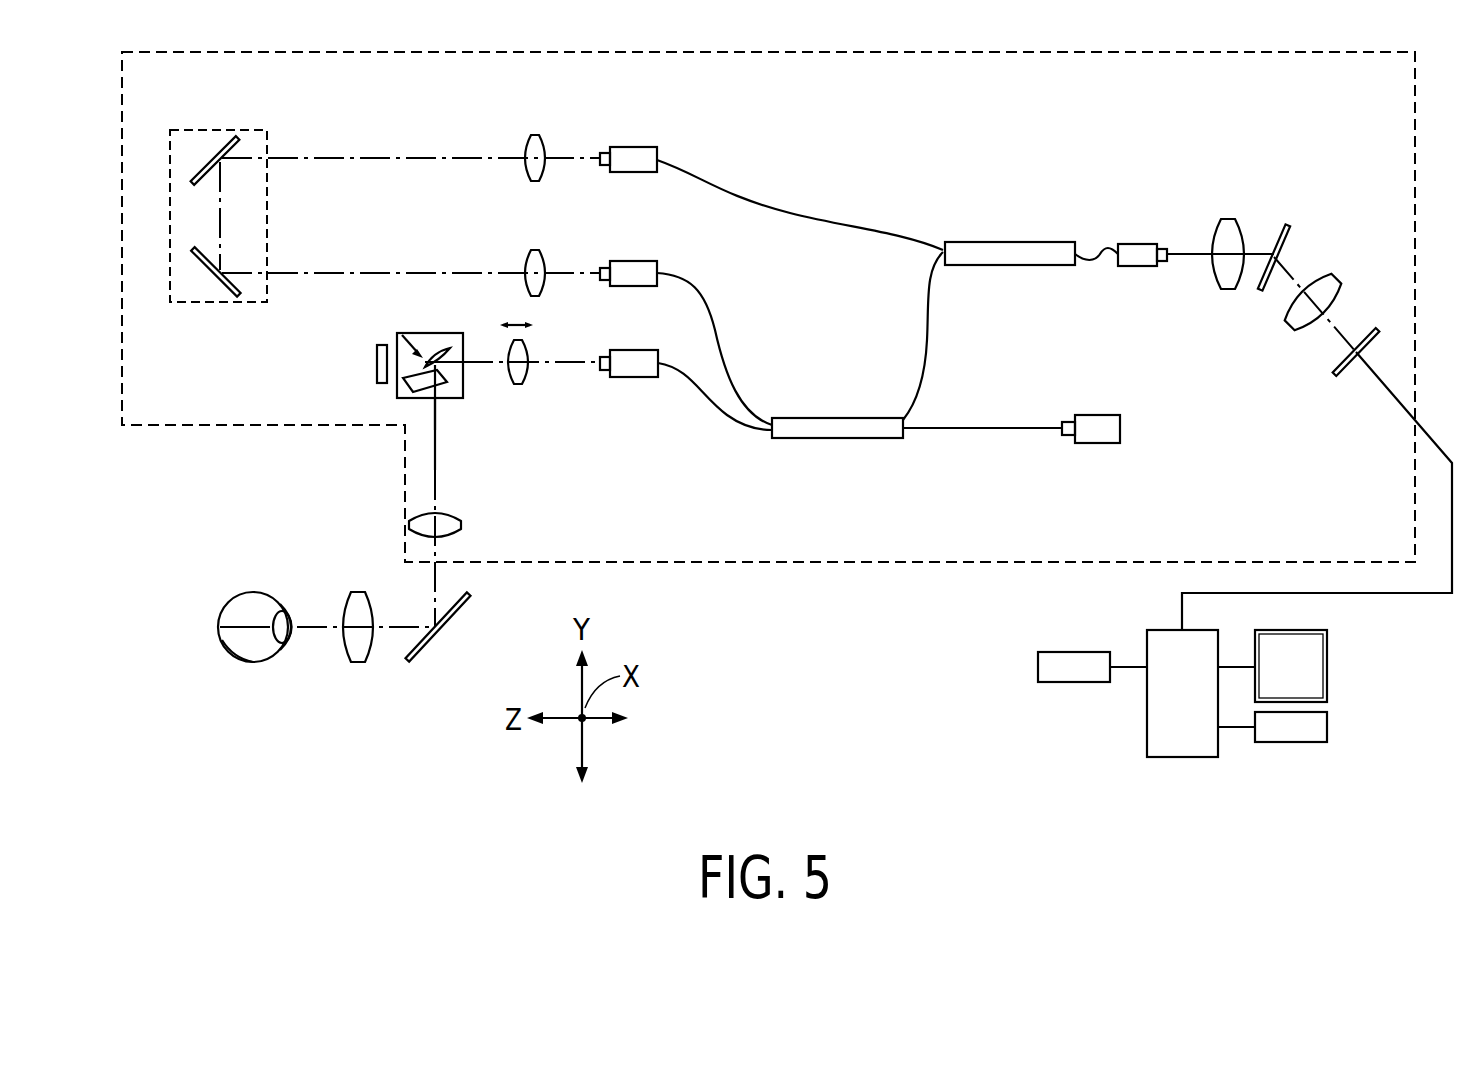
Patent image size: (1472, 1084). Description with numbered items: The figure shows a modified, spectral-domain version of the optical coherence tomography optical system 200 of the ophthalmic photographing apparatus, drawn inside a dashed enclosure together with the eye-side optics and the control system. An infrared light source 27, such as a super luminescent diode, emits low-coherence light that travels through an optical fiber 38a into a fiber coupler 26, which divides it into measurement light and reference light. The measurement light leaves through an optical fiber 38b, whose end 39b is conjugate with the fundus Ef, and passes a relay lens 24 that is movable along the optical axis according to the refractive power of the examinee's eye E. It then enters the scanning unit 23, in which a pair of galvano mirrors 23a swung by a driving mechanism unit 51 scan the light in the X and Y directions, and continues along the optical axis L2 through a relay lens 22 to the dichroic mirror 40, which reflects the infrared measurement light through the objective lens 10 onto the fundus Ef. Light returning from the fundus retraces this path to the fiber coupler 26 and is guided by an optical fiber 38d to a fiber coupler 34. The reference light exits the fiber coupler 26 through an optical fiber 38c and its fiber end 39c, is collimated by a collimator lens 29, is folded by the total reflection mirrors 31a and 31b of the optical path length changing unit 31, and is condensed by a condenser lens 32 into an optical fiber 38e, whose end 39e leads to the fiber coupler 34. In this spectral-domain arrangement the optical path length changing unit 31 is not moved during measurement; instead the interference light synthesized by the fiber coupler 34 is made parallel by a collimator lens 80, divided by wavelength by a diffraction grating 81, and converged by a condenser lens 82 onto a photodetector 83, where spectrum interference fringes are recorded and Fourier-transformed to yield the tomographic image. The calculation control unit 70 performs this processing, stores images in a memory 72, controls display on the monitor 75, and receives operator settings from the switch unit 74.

The optical coherence tomography optical system 200 is at (252, 427).
The optical path length changing unit 31 is at (252, 302).
The total reflection mirror 31a is at (197, 257).
The total reflection mirror 31b is at (225, 150).
The condenser lens 32 is at (533, 135).
The collimator lens 29 is at (533, 250).
The relay lens 24 is at (513, 387).
The light source 39e is at (597, 157).
The light source 39c is at (597, 272).
The end of optical fiber 39b is at (598, 363).
The optical fiber 38e is at (723, 195).
The optical fiber 38c is at (715, 319).
The optical fiber 38b is at (693, 385).
The optical fiber 38d is at (930, 338).
The optical fiber 38a is at (982, 432).
The fiber coupler 34 is at (978, 241).
The fiber coupler 26 is at (848, 428).
The infrared light source 27 is at (1095, 415).
The collimator lens 80 is at (1230, 220).
The diffraction grating 81 is at (1283, 228).
The condenser lens 82 is at (1288, 320).
The photodetector 83 is at (1333, 372).
The scanning unit 23 is at (450, 333).
The galvano mirrors 23a is at (401, 334).
The driving mechanism unit 51 is at (376, 361).
The optical axis L2 is at (437, 463).
The relay lens 22 is at (462, 525).
The objective lens 10 is at (358, 592).
The dichroic mirror 40 is at (441, 644).
The examinee's eye E is at (253, 668).
The fundus Ef is at (225, 645).
The calculation control unit 70 is at (1147, 728).
The switch unit 74 is at (1037, 666).
The monitor 75 is at (1327, 655).
The memory 72 is at (1327, 722).